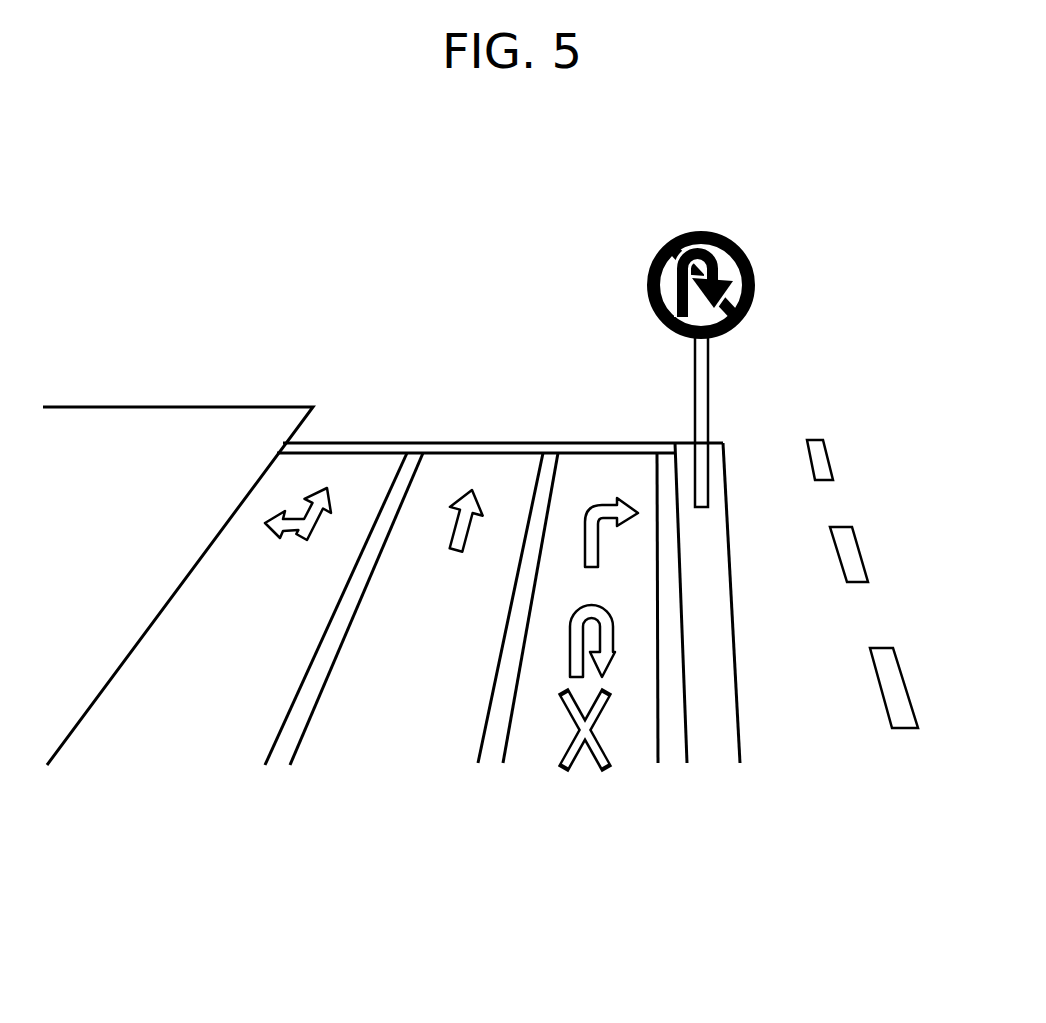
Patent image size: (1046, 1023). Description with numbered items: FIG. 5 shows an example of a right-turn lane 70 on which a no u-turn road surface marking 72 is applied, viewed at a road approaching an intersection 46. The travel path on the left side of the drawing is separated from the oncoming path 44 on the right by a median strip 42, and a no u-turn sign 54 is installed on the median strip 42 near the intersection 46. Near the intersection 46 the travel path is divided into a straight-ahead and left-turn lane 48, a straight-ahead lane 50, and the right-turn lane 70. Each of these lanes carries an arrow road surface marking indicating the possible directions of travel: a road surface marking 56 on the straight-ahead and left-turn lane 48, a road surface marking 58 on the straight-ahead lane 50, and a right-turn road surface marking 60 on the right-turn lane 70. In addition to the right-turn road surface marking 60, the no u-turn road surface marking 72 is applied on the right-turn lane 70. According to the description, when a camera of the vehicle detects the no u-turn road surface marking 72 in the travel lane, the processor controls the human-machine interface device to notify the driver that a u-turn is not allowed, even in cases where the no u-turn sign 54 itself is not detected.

The median strip 42 is at (708, 520).
The oncoming path 44 is at (792, 728).
The intersection 46 is at (537, 378).
The straight-ahead and left-turn lane 48 is at (227, 632).
The straight-ahead lane 50 is at (430, 650).
The no u-turn sign 54 is at (742, 246).
The road surface marking 56 is at (268, 522).
The road surface marking 58 is at (450, 525).
The right-turn road surface marking 60 is at (590, 510).
The right-turn lane 70 is at (538, 738).
The no u-turn road surface marking 72 is at (608, 665).